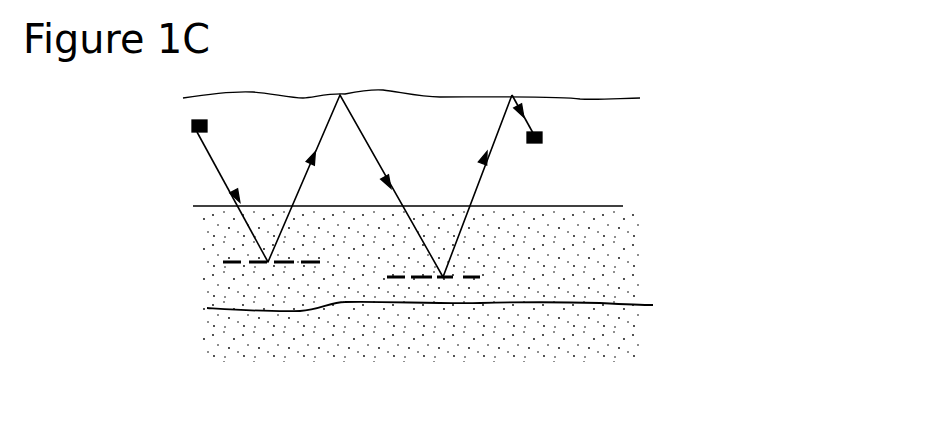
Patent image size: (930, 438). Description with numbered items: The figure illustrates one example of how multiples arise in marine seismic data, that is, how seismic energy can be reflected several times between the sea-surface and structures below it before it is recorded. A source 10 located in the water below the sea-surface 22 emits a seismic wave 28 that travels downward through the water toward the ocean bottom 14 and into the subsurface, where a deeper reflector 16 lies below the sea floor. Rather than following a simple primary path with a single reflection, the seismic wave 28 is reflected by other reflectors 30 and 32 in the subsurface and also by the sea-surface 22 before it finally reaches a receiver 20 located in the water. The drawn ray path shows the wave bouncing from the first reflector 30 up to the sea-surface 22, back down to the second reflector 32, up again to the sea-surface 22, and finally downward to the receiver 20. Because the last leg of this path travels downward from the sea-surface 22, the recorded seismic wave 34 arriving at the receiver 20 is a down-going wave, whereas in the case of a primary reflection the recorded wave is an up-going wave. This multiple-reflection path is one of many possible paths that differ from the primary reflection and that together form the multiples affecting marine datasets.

The source 10 is at (192, 126).
The ocean bottom 14 is at (604, 206).
The reflector 16 is at (625, 305).
The receiver 20 is at (542, 136).
The sea-surface 22 is at (595, 97).
The seismic wave 28 is at (222, 177).
The reflector 30 is at (240, 268).
The reflector 32 is at (470, 282).
The recorded seismic wave 34 is at (523, 118).